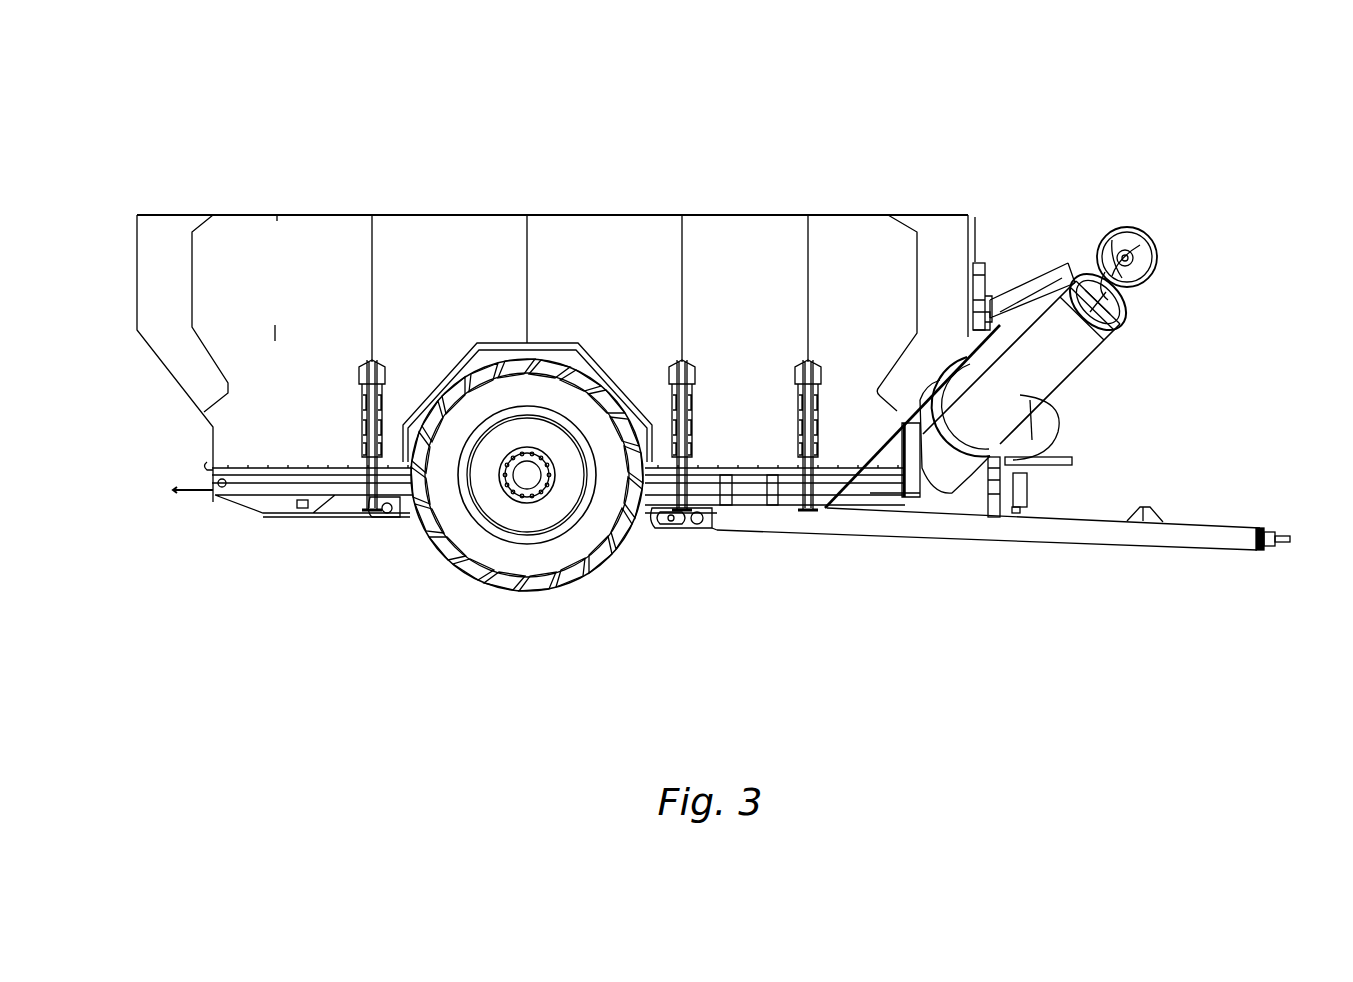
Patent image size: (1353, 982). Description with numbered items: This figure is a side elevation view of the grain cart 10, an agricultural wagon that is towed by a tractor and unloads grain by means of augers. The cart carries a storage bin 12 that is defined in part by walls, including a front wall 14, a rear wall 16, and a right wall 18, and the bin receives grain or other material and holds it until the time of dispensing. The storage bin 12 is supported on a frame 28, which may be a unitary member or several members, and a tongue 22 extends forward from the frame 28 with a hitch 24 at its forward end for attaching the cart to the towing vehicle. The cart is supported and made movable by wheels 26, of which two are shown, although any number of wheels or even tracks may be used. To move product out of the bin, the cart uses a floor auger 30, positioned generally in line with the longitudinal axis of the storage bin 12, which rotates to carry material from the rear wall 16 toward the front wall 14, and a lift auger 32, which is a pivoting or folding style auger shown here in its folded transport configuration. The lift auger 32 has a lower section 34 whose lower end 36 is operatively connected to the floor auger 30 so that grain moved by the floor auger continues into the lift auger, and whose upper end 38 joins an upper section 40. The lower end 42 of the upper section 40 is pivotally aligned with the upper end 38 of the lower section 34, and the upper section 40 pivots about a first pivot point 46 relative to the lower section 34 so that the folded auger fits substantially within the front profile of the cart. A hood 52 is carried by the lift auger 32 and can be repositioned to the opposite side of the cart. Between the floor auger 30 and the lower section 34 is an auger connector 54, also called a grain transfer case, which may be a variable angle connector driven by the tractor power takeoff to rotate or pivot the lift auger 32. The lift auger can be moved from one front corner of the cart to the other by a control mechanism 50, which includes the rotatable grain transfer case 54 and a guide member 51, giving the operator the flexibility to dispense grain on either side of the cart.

The grain cart 10 is at (313, 73).
The storage bin 12 is at (717, 210).
The front wall 14 is at (975, 222).
The rear wall 16 is at (137, 267).
The right wall 18 is at (243, 227).
The tongue 22 is at (1200, 523).
The hitch 24 is at (1283, 534).
The wheels 26 is at (442, 548).
The frame 28 is at (718, 527).
The floor auger 30 is at (752, 487).
The lift auger 32 is at (1093, 365).
The lower section 34 is at (1092, 343).
The lower end 36 is at (1035, 446).
The upper end 38 is at (1127, 316).
The upper section 40 is at (1085, 255).
The lower end 42 is at (1137, 232).
The first pivot point 46 is at (1132, 267).
The control mechanism 50 is at (1019, 497).
The guide member 51 is at (986, 277).
The hood 52 is at (1048, 413).
The auger connector 54 is at (960, 480).